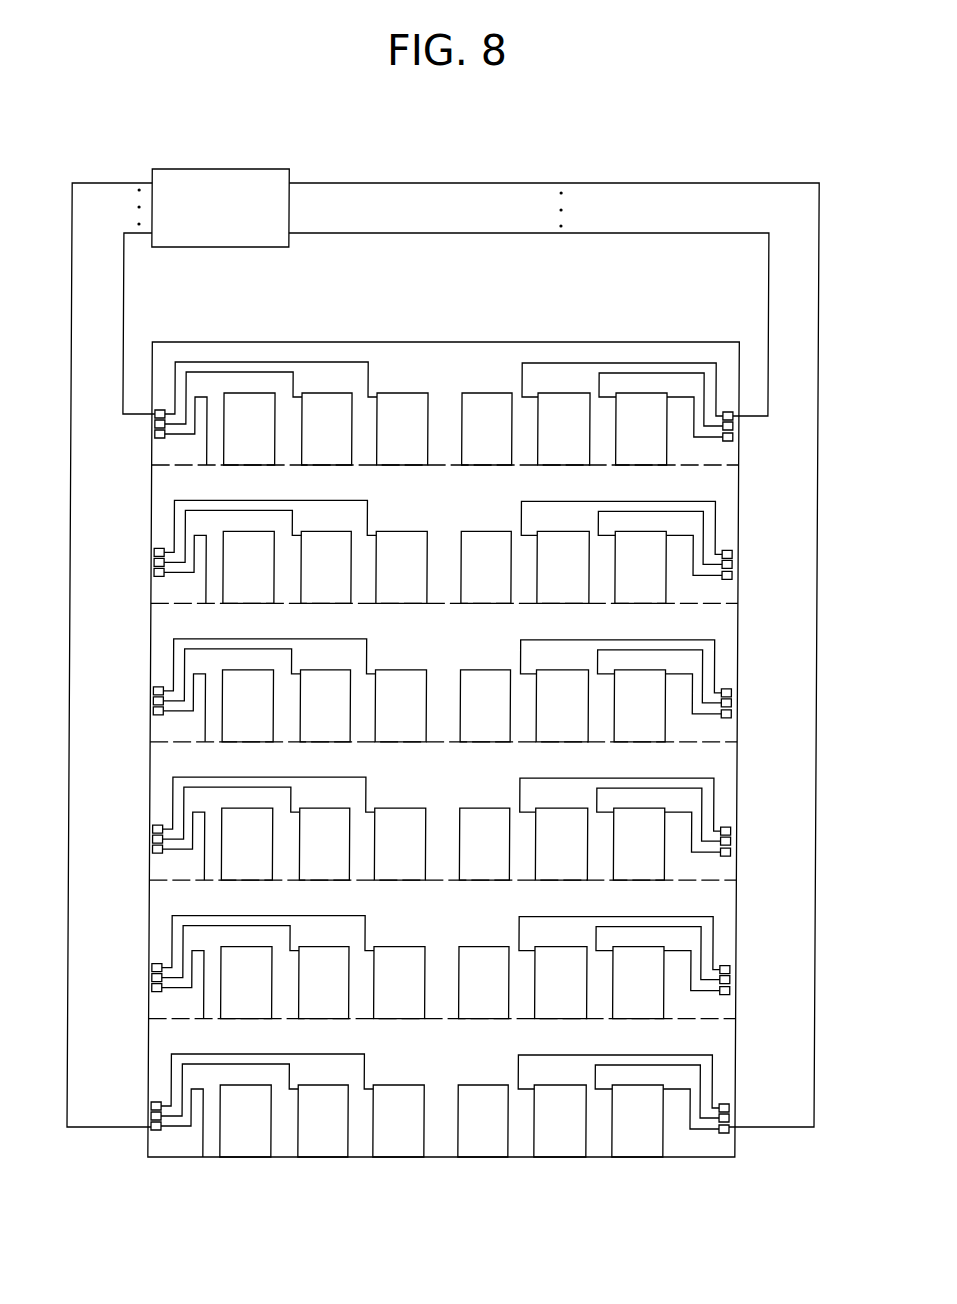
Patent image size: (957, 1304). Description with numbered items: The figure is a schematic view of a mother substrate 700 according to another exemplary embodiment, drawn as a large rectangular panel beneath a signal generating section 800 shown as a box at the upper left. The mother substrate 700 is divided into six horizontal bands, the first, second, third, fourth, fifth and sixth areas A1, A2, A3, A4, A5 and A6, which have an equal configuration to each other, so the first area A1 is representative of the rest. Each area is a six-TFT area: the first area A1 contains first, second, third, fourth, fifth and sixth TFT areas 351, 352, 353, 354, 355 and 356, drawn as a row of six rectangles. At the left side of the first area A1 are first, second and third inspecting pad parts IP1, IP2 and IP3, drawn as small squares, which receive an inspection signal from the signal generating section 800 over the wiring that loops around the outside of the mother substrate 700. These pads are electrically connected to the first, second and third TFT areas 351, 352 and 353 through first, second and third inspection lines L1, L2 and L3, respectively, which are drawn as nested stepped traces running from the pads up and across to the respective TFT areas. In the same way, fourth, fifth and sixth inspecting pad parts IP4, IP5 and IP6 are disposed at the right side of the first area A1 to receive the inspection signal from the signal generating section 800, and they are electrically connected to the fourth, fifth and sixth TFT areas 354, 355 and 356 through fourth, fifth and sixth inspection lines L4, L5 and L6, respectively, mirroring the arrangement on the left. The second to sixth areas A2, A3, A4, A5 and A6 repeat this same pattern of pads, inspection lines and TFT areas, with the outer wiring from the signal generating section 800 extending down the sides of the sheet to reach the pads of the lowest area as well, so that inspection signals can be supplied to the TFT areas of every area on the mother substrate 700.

The signal generating section 800 is at (223, 169).
The mother substrate 700 is at (495, 342).
The first inspection line L1 is at (207, 393).
The second inspection line L2 is at (247, 372).
The third inspection line L3 is at (218, 362).
The fourth inspection line L4 is at (628, 363).
The fifth inspection line L5 is at (660, 373).
The sixth inspection line L6 is at (678, 397).
The first inspecting pad part IP1 is at (155, 435).
The second inspecting pad part IP2 is at (155, 423).
The third inspecting pad part IP3 is at (155, 411).
The fourth inspecting pad part IP4 is at (733, 413).
The fifth inspecting pad part IP5 is at (733, 427).
The sixth inspecting pad part IP6 is at (737, 441).
The first TFT area 351 is at (248, 466).
The second TFT area 352 is at (326, 466).
The third TFT area 353 is at (402, 466).
The fourth TFT area 354 is at (486, 466).
The fifth TFT area 355 is at (564, 466).
The sixth TFT area 356 is at (641, 466).
The first area A1 is at (447, 398).
The second area A2 is at (445, 551).
The third area A3 is at (444, 690).
The fourth area A4 is at (443, 828).
The fifth area A5 is at (443, 967).
The sixth area A6 is at (440, 1105).